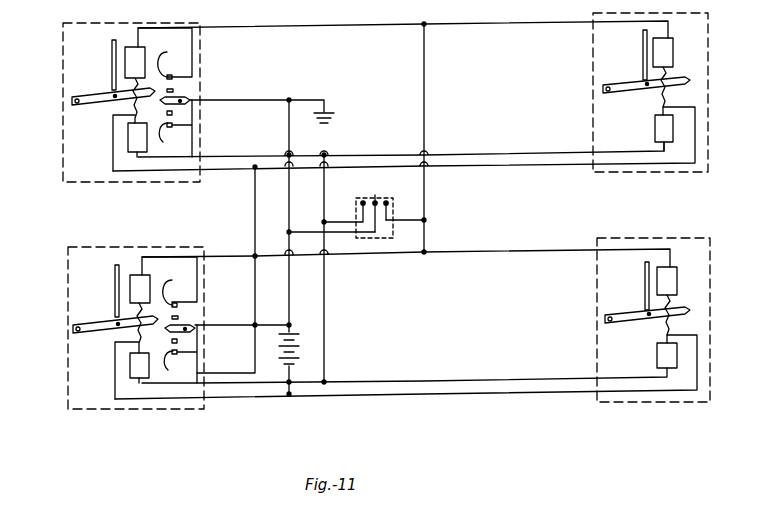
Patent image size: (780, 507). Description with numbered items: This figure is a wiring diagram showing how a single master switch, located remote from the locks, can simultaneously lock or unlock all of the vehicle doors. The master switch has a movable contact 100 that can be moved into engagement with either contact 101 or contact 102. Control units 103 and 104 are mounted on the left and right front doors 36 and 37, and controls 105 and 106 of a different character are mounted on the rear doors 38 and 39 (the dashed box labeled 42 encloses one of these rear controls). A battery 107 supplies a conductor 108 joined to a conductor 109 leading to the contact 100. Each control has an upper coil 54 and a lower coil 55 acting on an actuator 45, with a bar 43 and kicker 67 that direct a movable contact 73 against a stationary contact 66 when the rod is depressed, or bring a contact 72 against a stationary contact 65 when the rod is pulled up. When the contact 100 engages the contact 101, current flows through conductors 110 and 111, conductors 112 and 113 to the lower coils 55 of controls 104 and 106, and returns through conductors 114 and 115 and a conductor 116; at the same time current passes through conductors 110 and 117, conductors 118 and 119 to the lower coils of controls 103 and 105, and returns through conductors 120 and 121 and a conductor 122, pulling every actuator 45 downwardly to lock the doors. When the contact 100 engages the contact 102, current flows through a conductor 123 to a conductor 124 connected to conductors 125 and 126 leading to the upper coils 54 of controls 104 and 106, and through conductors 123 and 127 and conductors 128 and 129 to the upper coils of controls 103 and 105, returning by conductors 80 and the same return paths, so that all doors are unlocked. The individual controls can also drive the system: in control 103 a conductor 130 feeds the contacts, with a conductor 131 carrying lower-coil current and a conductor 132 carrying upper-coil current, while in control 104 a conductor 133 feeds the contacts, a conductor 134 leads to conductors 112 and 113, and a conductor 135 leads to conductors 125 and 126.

The left front door 36 is at (68, 289).
The right front door 37 is at (63, 66).
The rear door 38 is at (710, 335).
The rear door 39 is at (708, 21).
The switch unit 42 is at (710, 250).
The bar 43 is at (94, 97).
The actuator 45 is at (112, 54).
The upper coil 54 is at (131, 50).
The lower coil 55 is at (135, 135).
The stationary contact 65 is at (172, 178).
The stationary contact 66 is at (173, 251).
The kicker 67 is at (191, 99).
The contact 72 is at (174, 90).
The movable contact 73 is at (167, 114).
The conductor 80 is at (127, 105).
The contact 100 is at (375, 197).
The contact 101 is at (367, 198).
The contact 102 is at (386, 199).
The control unit 103 is at (68, 260).
The control unit 104 is at (63, 35).
The control 105 is at (703, 266).
The control 106 is at (703, 101).
The battery 107 is at (300, 341).
The conductor 108 is at (289, 302).
The conductor 109 is at (297, 230).
The conductor 110 is at (353, 221).
The conductor 111 is at (322, 186).
The conductor 112 is at (268, 157).
The conductor 113 is at (455, 155).
The conductor 114 is at (213, 172).
The conductor 115 is at (570, 165).
The conductor 116 is at (255, 212).
The conductor 117 is at (325, 291).
The conductor 118 is at (258, 383).
The conductor 119 is at (540, 381).
The conductor 120 is at (180, 400).
The conductor 121 is at (570, 392).
The conductor 122 is at (290, 383).
The conductor 123 is at (410, 221).
The conductor 124 is at (425, 76).
The conductor 125 is at (378, 25).
The conductor 126 is at (468, 22).
The conductor 127 is at (426, 241).
The conductor 128 is at (415, 255).
The conductor 129 is at (558, 250).
The conductor 130 is at (222, 332).
The conductor 131 is at (205, 370).
The conductor 132 is at (205, 281).
The conductor 133 is at (289, 122).
The conductor 134 is at (200, 145).
The conductor 135 is at (200, 44).